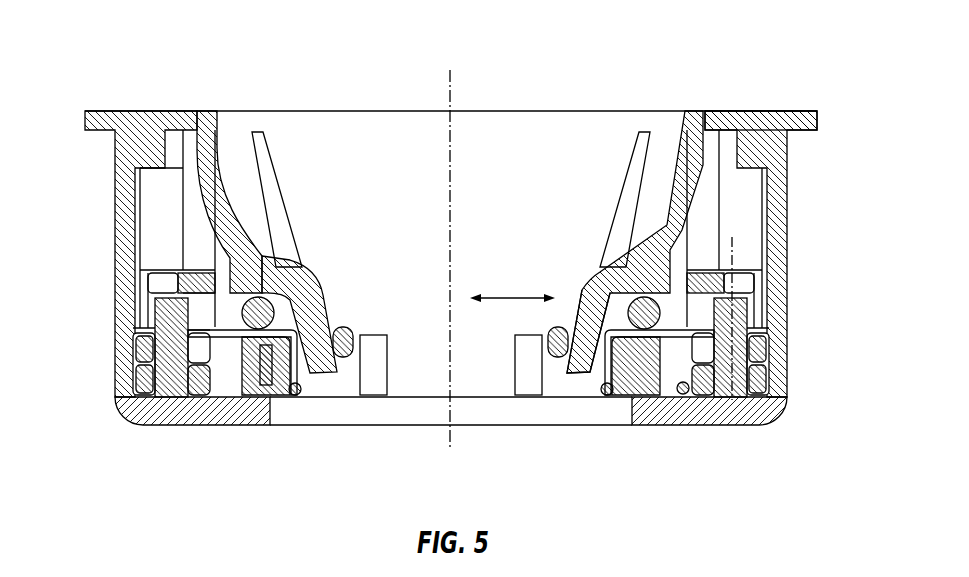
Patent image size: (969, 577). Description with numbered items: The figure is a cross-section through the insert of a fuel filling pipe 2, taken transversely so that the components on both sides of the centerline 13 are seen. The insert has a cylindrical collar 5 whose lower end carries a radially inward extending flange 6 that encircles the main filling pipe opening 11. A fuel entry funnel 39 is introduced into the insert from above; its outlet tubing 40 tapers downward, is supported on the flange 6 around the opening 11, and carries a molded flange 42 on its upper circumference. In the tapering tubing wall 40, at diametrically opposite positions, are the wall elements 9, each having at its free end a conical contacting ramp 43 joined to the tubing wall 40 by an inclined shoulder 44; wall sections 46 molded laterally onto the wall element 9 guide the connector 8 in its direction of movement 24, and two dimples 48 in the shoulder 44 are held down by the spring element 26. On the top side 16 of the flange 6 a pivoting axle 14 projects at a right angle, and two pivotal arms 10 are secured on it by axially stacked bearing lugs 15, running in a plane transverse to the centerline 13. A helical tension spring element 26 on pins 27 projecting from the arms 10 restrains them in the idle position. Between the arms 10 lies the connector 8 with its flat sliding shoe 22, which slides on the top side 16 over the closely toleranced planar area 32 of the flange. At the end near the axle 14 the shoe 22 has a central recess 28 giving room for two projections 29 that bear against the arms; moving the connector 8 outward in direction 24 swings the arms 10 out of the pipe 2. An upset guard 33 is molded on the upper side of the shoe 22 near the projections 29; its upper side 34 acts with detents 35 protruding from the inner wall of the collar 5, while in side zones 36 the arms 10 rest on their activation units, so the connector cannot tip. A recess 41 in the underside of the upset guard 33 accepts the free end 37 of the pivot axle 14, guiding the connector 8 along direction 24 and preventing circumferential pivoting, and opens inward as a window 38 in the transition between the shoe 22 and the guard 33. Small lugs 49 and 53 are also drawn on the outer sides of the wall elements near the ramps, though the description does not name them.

The filling pipe 2 is at (533, 170).
The cylindrical collar 5 is at (783, 202).
The flange 6 is at (207, 382).
The connector 8 is at (287, 359).
The wall element 9 is at (332, 281).
The pivotal arm 10 is at (378, 357).
The main filling pipe opening 11 is at (275, 408).
The centerline 13 is at (452, 95).
The pivoting axle 14 is at (174, 388).
The bearing lug 15 is at (135, 385).
The top side of the flange 16 is at (712, 385).
The sliding shoe 22 is at (275, 372).
The direction of movement 24 is at (522, 296).
The spring element 26 is at (226, 345).
The pin 27 is at (257, 296).
The central recess 28 is at (205, 350).
The projection 29 is at (690, 348).
The planar area 32 is at (625, 375).
The upset guard 33 is at (165, 218).
The upper side of the upset guard 34 is at (165, 268).
The detent 35 is at (200, 298).
The side zone 36 is at (700, 310).
The free end of the pivot axle 37 is at (160, 290).
The window 38 is at (166, 405).
The fuel entry funnel 39 is at (353, 150).
The outlet tubing 40 is at (400, 143).
The recess 41 is at (190, 286).
The flange of the funnel 42 is at (790, 108).
The contacting ramp 43 is at (580, 310).
The inclined shoulder 44 is at (650, 262).
The wall section 46 is at (665, 350).
The dimple 48 is at (268, 240).
The latching lug 49 is at (346, 328).
The latching lug 53 is at (575, 332).